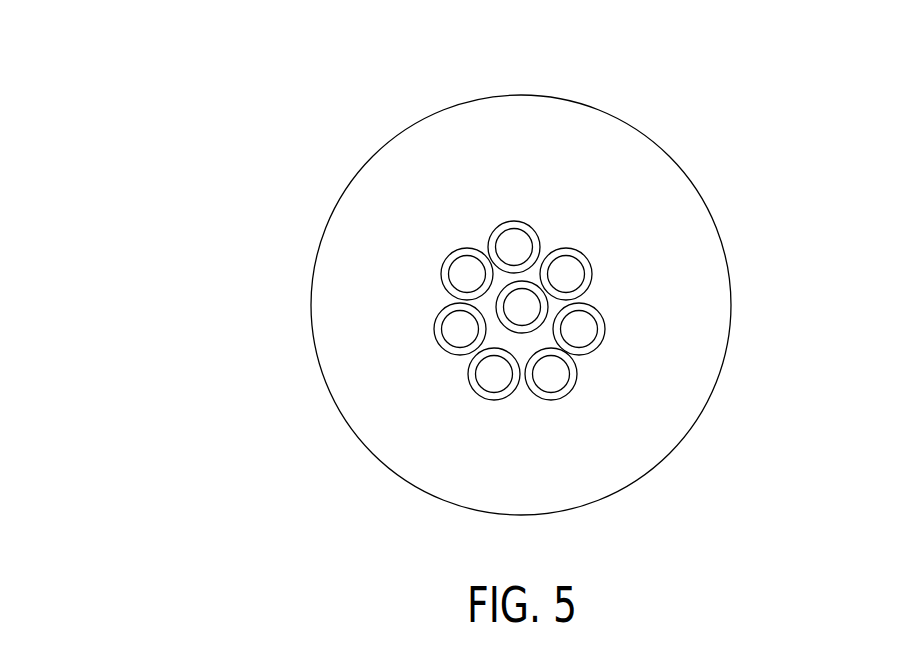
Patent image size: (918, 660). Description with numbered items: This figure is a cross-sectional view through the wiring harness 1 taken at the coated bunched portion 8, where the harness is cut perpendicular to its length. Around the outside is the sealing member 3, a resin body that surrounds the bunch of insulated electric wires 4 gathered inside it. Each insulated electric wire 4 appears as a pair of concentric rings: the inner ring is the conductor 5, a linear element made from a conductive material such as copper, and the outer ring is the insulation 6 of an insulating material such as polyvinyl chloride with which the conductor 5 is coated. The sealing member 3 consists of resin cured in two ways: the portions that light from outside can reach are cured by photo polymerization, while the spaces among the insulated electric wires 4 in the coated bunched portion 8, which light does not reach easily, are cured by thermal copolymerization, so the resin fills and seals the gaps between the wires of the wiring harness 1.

The wiring harness 1 is at (529, 325).
The sealing member 3 is at (500, 279).
The insulated electric wire 4 is at (453, 249).
The conductor 5 is at (562, 267).
The insulation 6 is at (605, 313).
The coated bunched portion 8 is at (574, 387).